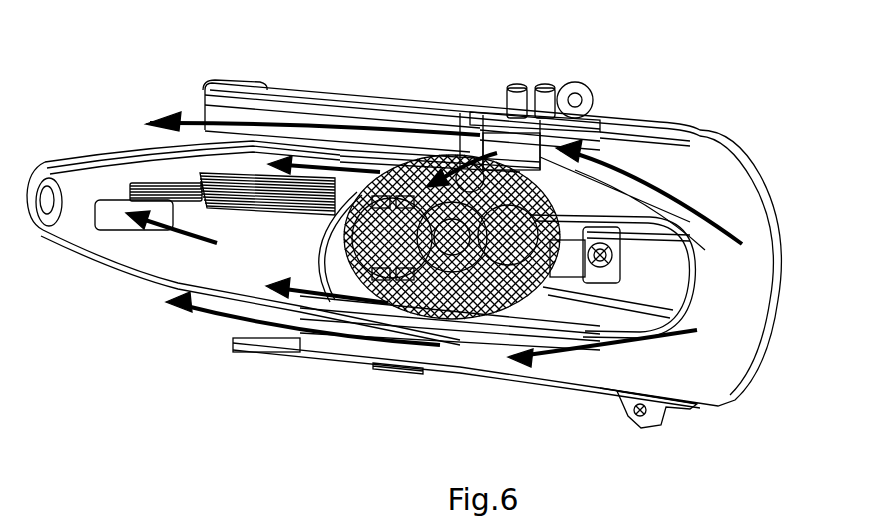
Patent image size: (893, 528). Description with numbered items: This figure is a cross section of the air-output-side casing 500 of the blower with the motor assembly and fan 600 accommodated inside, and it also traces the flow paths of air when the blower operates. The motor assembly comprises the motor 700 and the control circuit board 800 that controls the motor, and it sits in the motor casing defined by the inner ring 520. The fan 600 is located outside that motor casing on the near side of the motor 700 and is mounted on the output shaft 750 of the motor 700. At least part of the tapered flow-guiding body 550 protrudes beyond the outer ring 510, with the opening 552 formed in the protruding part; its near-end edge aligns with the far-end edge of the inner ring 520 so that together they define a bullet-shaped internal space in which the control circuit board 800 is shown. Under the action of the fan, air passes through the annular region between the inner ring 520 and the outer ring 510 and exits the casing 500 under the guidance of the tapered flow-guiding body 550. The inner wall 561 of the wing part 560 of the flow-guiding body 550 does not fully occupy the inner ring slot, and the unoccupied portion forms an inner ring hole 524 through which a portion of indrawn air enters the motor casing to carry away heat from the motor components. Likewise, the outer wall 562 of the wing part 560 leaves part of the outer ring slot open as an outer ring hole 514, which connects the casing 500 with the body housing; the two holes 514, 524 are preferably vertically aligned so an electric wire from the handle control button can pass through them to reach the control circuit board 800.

The air-output-side casing 500 is at (672, 128).
The outer ring 510 is at (262, 325).
The outer ring hole 514 is at (482, 115).
The inner ring 520 is at (392, 305).
The inner ring hole 524 is at (480, 168).
The tapered flow-guiding body 550 is at (178, 284).
The opening 552 is at (120, 220).
The wing part 560 is at (215, 108).
The inner wall 561 is at (372, 152).
The outer wall 562 is at (264, 87).
The fan 600 is at (612, 175).
The motor 700 is at (448, 290).
The output shaft 750 is at (539, 300).
The control circuit board 800 is at (365, 265).